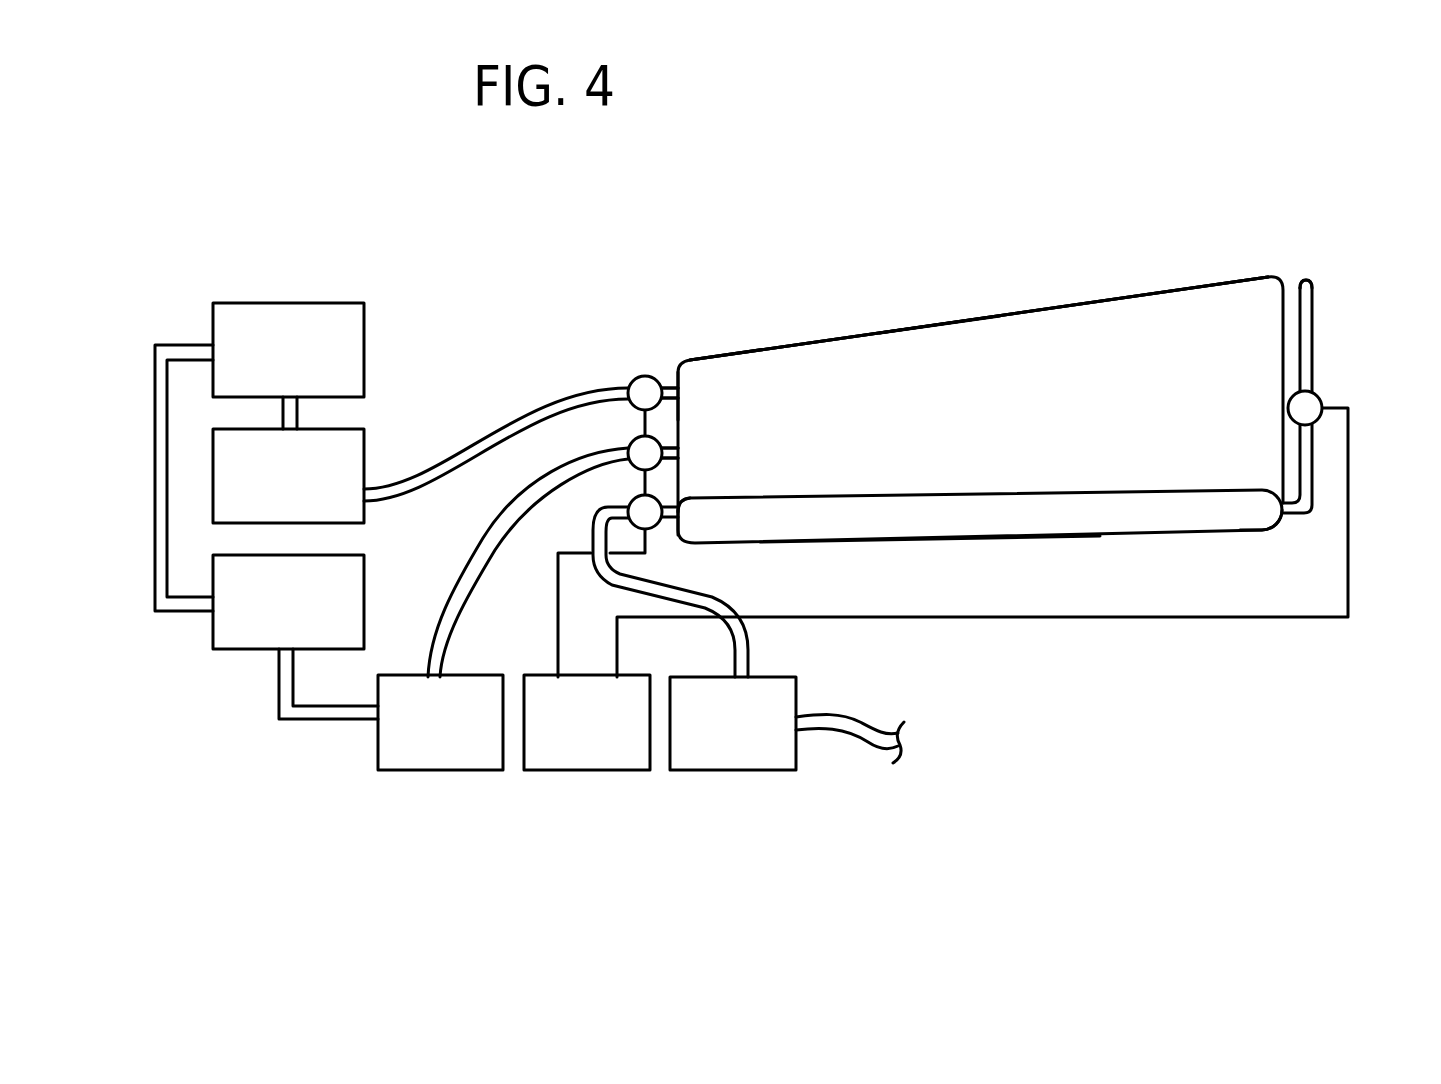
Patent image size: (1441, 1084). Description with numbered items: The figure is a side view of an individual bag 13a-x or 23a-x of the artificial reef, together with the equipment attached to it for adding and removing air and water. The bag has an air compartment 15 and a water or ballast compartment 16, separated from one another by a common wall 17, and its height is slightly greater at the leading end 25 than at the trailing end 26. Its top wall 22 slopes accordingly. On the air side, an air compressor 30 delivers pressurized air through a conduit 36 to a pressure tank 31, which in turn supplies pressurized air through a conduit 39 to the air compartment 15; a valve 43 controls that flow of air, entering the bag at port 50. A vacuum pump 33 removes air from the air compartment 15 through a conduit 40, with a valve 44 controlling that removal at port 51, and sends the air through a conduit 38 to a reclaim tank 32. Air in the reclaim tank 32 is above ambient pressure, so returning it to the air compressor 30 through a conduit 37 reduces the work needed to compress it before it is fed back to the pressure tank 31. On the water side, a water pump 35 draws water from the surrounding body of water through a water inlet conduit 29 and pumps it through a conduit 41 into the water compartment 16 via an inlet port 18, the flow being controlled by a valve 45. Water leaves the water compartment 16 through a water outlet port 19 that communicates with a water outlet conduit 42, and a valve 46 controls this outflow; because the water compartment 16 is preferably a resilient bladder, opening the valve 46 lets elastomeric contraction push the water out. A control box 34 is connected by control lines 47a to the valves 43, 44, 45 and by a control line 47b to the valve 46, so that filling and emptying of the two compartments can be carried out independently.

The bag 13a-x is at (873, 315).
The bag 23a-x is at (873, 315).
The air compartment 15 is at (1166, 313).
The water compartment 16 is at (885, 520).
The common wall 17 is at (975, 490).
The inlet port 18 is at (688, 512).
The water outlet port 19 is at (1283, 505).
The top wall 22 is at (1031, 307).
The leading end 25 is at (1335, 280).
The trailing end 26 is at (674, 362).
The water inlet conduit 29 is at (858, 723).
The air compressor 30 is at (320, 303).
The pressure tank 31 is at (364, 522).
The reclaim tank 32 is at (364, 610).
The vacuum pump 33 is at (414, 770).
The control box 34 is at (578, 770).
The water pump 35 is at (784, 770).
The conduit 36 is at (297, 413).
The conduit 37 is at (153, 428).
The conduit 38 is at (292, 720).
The conduit 39 is at (492, 420).
The conduit 40 is at (521, 498).
The conduit 41 is at (698, 595).
The water outlet conduit 42 is at (1312, 338).
The valve 43 is at (643, 378).
The valve 44 is at (627, 443).
The valve 45 is at (670, 505).
The valve 46 is at (1320, 395).
The control lines 47a is at (643, 423).
The control line 47b is at (1065, 617).
The pressure port 50 is at (678, 394).
The vacuum port 51 is at (678, 452).